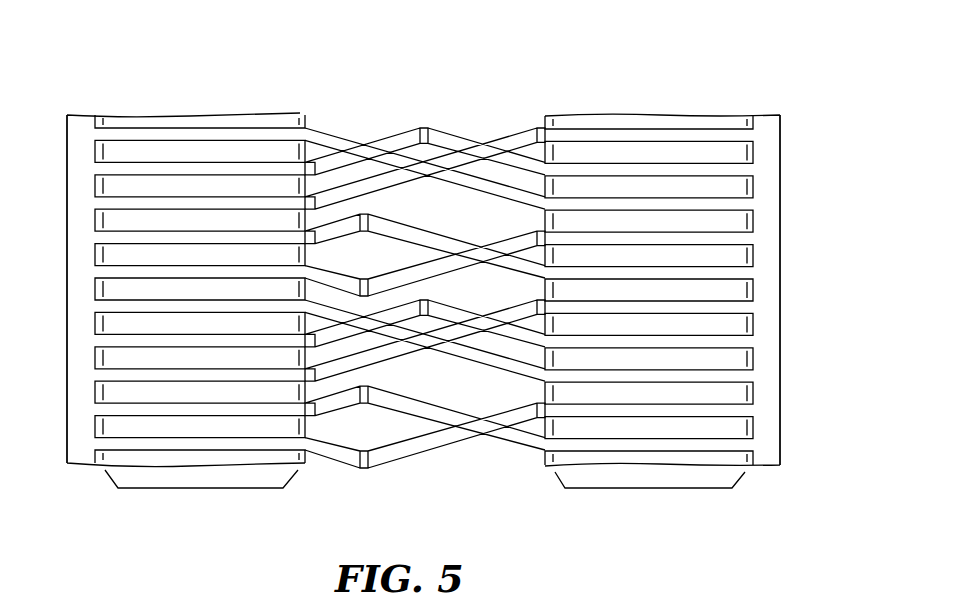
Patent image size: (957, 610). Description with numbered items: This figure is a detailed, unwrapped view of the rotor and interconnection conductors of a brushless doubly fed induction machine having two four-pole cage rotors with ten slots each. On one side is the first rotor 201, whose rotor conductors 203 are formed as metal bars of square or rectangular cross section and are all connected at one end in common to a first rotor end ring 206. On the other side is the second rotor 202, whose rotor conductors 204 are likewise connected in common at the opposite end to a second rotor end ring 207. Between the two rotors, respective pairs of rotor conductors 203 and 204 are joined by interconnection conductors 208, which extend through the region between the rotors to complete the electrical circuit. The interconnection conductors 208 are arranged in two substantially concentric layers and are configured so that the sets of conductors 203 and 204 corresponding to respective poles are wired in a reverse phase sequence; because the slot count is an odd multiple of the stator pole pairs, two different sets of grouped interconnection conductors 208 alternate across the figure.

The first rotor 201 is at (197, 488).
The second rotor 202 is at (643, 488).
The rotor conductors 203 is at (232, 134).
The rotor conductors 204 is at (648, 134).
The first rotor end ring 206 is at (77, 118).
The second rotor end ring 207 is at (765, 448).
The interconnection conductors 208 is at (377, 455).